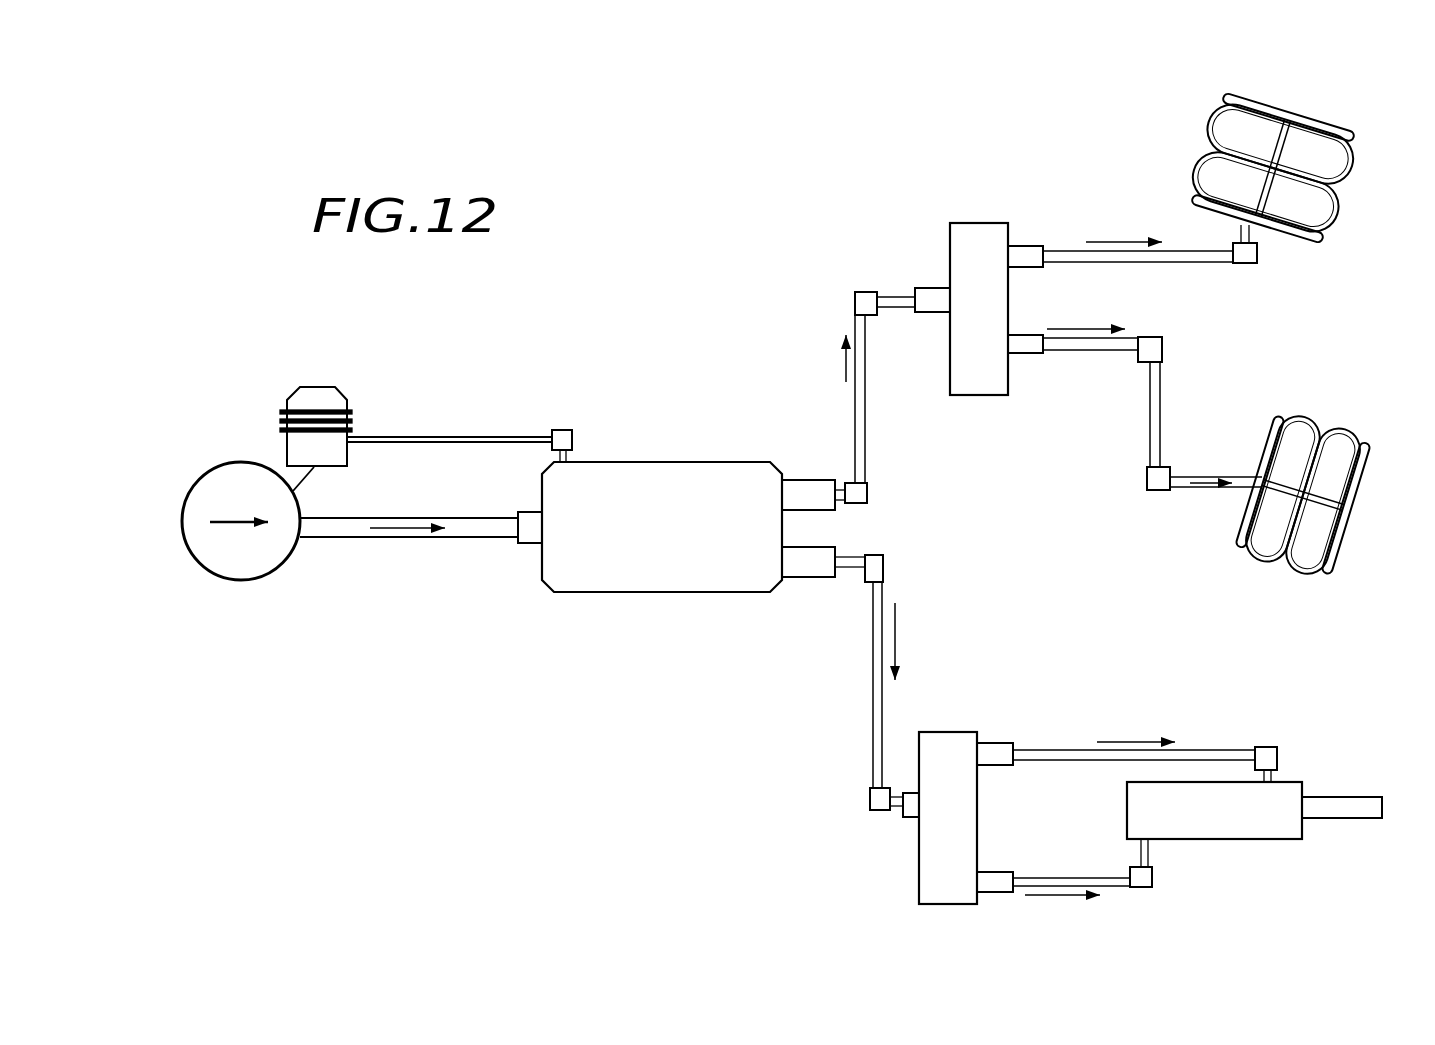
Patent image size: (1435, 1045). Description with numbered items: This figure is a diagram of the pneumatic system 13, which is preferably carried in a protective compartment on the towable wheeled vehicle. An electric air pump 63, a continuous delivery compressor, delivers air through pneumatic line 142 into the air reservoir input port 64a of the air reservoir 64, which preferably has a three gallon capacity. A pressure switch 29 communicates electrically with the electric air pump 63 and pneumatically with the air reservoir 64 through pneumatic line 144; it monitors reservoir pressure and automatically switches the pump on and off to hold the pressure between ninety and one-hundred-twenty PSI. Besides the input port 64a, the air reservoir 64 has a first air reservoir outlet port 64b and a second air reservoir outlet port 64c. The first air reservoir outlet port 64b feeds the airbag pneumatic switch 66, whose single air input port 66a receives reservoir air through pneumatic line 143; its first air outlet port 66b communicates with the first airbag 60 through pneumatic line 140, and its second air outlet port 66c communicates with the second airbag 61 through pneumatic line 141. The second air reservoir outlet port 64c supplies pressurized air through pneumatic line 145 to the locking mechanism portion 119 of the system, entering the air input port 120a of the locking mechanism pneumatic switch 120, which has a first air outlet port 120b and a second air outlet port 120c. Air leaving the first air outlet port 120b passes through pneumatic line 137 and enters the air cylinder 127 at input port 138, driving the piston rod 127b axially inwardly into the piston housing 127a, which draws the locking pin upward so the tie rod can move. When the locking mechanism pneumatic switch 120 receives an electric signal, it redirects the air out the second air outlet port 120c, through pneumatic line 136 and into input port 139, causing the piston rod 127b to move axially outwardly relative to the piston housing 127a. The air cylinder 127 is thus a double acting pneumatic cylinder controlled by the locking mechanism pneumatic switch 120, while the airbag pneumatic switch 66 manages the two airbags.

The pneumatic system 13 is at (583, 380).
The pressure switch 29 is at (295, 402).
The first airbag 60 is at (1300, 212).
The second airbag 61 is at (1310, 542).
The electric air pump 63 is at (200, 503).
The air reservoir 64 is at (655, 516).
The air reservoir input port 64a is at (532, 542).
The first air reservoir outlet port 64b is at (812, 490).
The second air reservoir outlet port 64c is at (815, 565).
The airbag pneumatic switch 66 is at (975, 245).
The air input port 66a is at (930, 300).
The first air outlet port 66b is at (1028, 255).
The second air outlet port 66c is at (1025, 350).
The actuator subsystem 119 is at (990, 704).
The locking mechanism pneumatic switch 120 is at (938, 868).
The air input port 120a is at (910, 820).
The first air outlet port 120b is at (1003, 750).
The second air outlet port 120c is at (995, 886).
The air cylinder 127 is at (1266, 857).
The piston housing 127a is at (1245, 830).
The piston rod 127b is at (1335, 817).
The pneumatic line 136 is at (1068, 878).
The pneumatic line 137 is at (1230, 755).
The input port 138 is at (1276, 778).
The input port 139 is at (1140, 855).
The pneumatic line 140 is at (1190, 260).
The pneumatic line 141 is at (1152, 420).
The pneumatic line 142 is at (480, 540).
The pneumatic line 143 is at (868, 442).
The pneumatic line 144 is at (417, 437).
The pneumatic line 145 is at (875, 716).